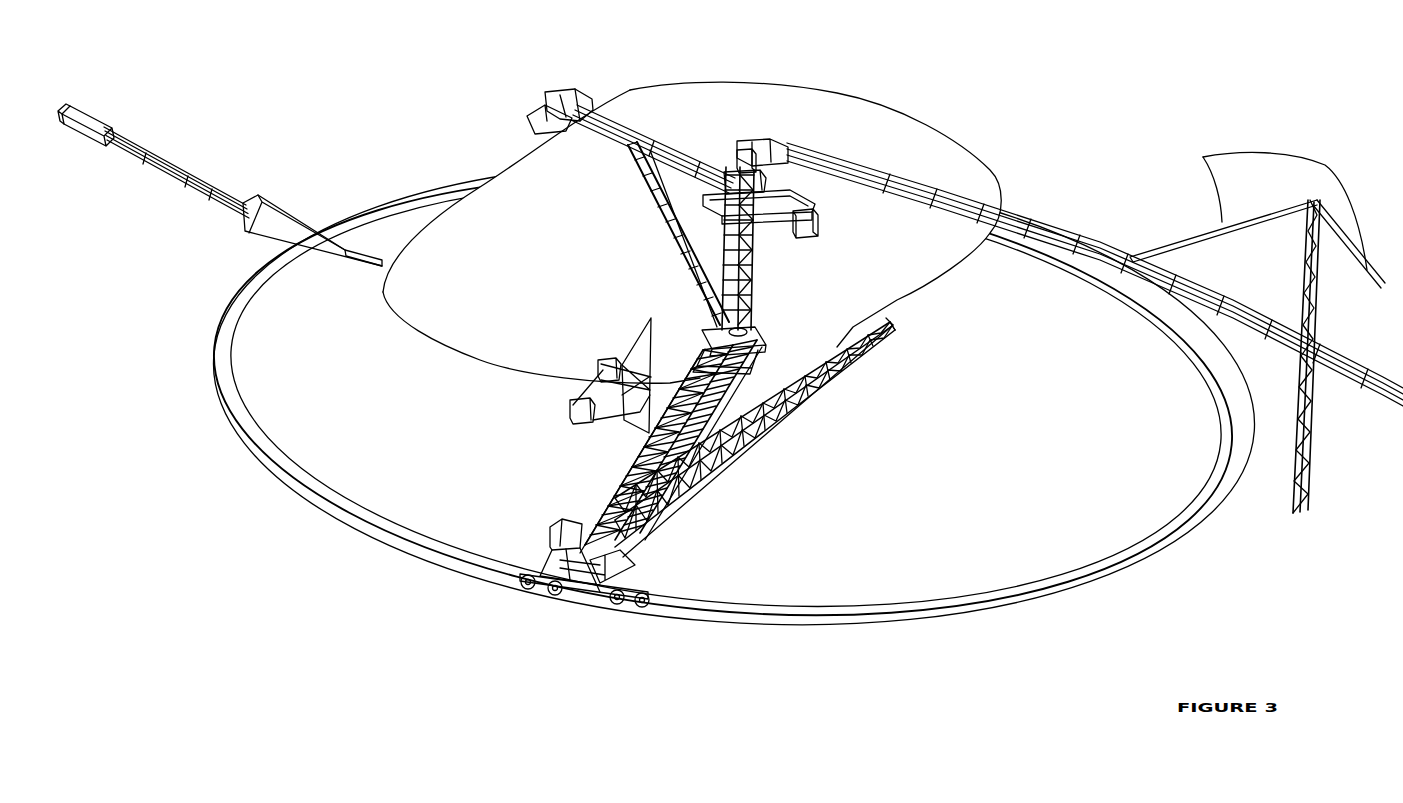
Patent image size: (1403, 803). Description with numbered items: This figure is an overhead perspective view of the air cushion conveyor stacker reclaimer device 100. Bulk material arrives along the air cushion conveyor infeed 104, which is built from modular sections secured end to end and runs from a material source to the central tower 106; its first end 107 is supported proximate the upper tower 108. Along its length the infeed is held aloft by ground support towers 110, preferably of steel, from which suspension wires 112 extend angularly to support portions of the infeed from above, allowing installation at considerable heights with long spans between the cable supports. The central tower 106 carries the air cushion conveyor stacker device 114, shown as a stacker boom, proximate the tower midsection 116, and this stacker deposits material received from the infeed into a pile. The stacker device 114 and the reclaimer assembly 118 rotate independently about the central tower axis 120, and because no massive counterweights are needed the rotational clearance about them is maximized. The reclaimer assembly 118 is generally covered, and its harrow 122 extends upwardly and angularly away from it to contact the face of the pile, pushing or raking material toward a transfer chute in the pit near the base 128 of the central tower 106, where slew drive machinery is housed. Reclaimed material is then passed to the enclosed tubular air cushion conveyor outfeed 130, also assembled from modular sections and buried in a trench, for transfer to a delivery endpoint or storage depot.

The air cushion conveyor stacker reclaimer device 100 is at (957, 466).
The air cushion conveyor infeed 104 is at (840, 160).
The central tower 106 is at (757, 258).
The first end 107 is at (760, 142).
The upper tower 108 is at (723, 167).
The ground support tower 110 is at (1293, 513).
The suspension wire 112 is at (1203, 157).
The air cushion conveyor stacker device 114 is at (612, 148).
The tower midsection 116 is at (715, 207).
The reclaimer assembly 118 is at (628, 563).
The central tower axis 120 is at (757, 135).
The harrow 122 is at (753, 440).
The base 128 is at (760, 363).
The air cushion conveyor outfeed 130 is at (175, 167).